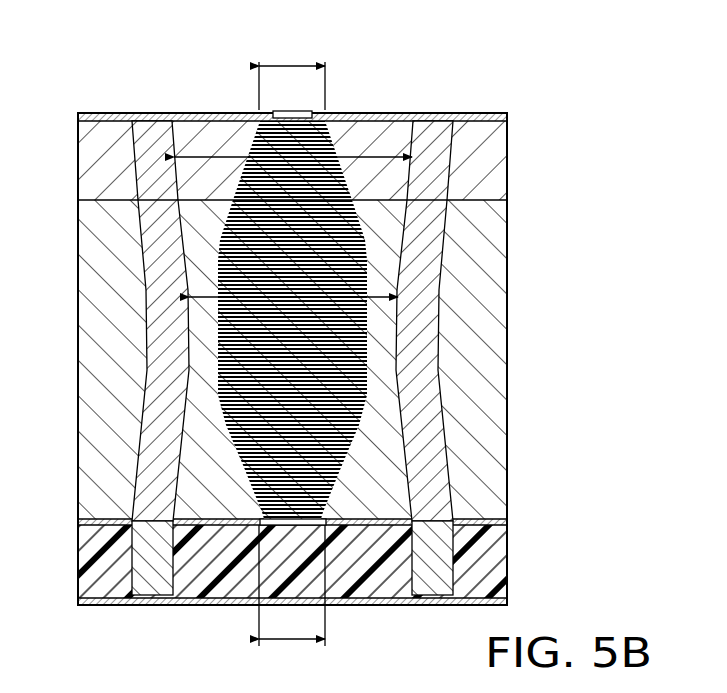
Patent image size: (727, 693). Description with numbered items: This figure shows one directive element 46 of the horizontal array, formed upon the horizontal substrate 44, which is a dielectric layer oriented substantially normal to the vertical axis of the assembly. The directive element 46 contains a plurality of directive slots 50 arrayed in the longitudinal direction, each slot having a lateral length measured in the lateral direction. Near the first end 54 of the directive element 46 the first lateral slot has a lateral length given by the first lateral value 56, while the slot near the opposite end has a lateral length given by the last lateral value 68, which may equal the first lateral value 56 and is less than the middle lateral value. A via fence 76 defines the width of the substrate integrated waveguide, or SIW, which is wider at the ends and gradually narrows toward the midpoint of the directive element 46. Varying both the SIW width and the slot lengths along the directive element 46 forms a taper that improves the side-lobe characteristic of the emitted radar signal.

The directive element 46 is at (333, 353).
The via fence 76 is at (130, 100).
The last lateral value 68 is at (290, 66).
The substrate integrated waveguide SIW is at (355, 150).
The directive slots 50 is at (223, 462).
The horizontal substrate 44 is at (509, 549).
The first end 54 is at (182, 628).
The first lateral value 56 is at (296, 642).